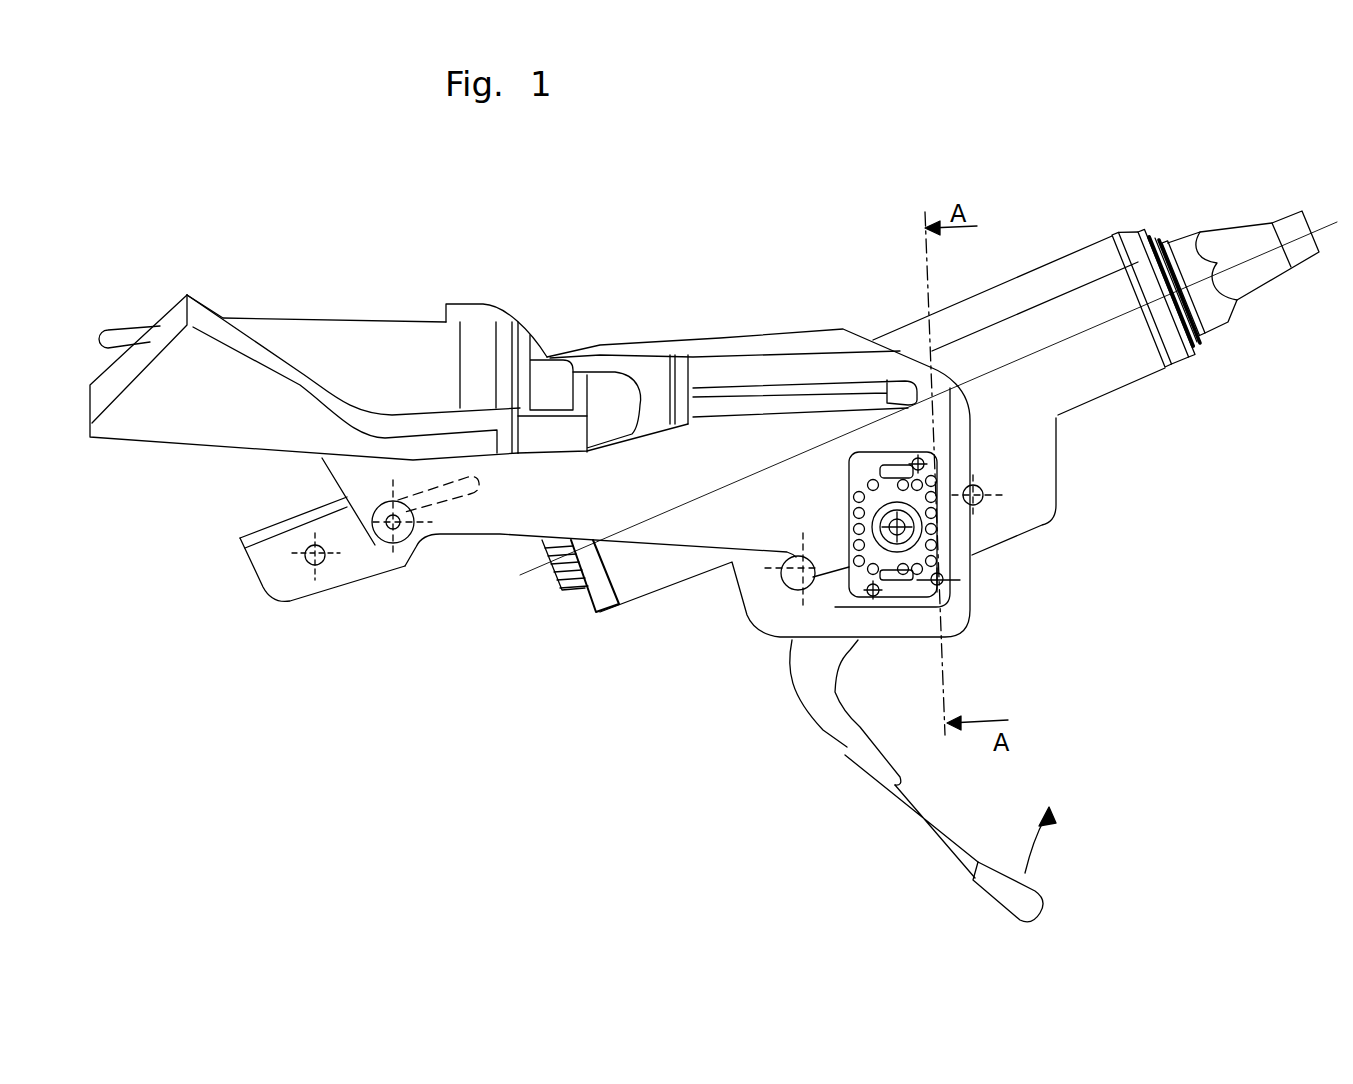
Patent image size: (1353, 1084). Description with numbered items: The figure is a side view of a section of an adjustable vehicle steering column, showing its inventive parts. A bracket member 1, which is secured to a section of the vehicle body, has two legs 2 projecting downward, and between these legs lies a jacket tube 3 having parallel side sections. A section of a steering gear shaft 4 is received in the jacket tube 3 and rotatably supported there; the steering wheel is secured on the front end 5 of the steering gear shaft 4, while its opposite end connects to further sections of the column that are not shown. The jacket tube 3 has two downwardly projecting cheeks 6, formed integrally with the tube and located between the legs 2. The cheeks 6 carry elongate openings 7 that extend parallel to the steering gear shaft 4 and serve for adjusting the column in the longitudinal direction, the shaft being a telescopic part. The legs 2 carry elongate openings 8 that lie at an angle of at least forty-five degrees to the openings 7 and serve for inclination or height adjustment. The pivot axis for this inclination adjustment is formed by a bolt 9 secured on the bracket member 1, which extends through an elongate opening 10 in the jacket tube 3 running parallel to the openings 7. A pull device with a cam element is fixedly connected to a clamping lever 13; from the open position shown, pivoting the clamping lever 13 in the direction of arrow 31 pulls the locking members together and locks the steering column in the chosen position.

The bracket member 1 is at (272, 306).
The legs 2 is at (828, 593).
The jacket tube 3 is at (638, 577).
The steering gear shaft 4 is at (1205, 307).
The front end 5 is at (1291, 232).
The cheeks 6 is at (1020, 510).
The elongate openings 7 is at (831, 549).
The elongate openings 8 is at (890, 470).
The bolt 9 is at (380, 545).
The elongate opening 10 is at (347, 548).
The clamping lever 13 is at (825, 703).
The arrow 31 is at (1031, 858).